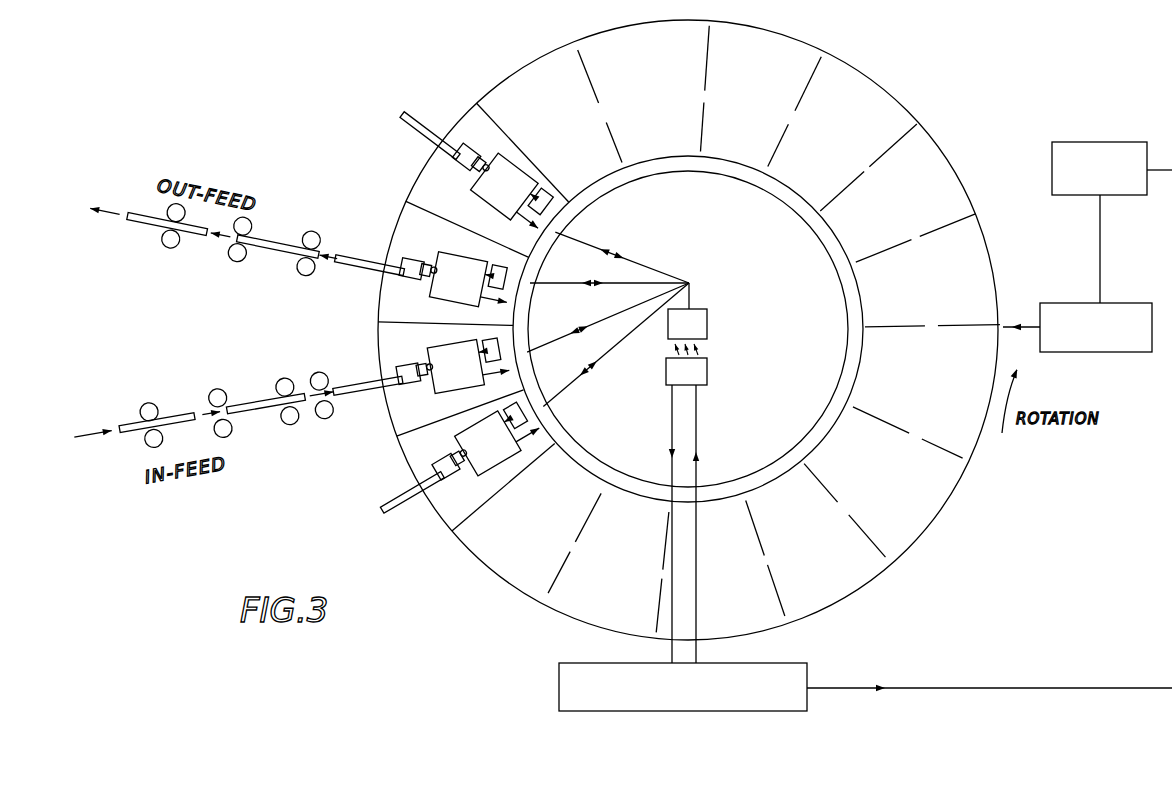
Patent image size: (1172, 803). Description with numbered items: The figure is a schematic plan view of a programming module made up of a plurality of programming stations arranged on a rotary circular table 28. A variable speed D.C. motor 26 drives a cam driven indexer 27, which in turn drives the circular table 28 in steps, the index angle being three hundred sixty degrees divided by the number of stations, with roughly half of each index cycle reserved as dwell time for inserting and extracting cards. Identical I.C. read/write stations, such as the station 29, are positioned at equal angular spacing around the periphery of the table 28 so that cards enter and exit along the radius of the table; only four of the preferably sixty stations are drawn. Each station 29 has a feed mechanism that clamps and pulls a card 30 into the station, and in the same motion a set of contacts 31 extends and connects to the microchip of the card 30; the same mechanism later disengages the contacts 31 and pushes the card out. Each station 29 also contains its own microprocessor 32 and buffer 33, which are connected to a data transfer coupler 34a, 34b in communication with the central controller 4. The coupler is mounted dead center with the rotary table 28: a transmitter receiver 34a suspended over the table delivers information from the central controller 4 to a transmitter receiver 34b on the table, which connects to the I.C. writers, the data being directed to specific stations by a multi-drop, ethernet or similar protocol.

The central controller 4 is at (559, 690).
The variable speed D.C. motor 26 is at (1107, 142).
The cam driven indexer 27 is at (1090, 352).
The circular table 28 is at (907, 548).
The I.C. read/write station 29 is at (392, 424).
The card 30 is at (320, 376).
The set of contacts 31 is at (382, 356).
The microprocessor 32 is at (455, 366).
The buffer 33 is at (523, 327).
The transmitter receiver 34a is at (714, 372).
The transmitter receiver 34b is at (714, 325).